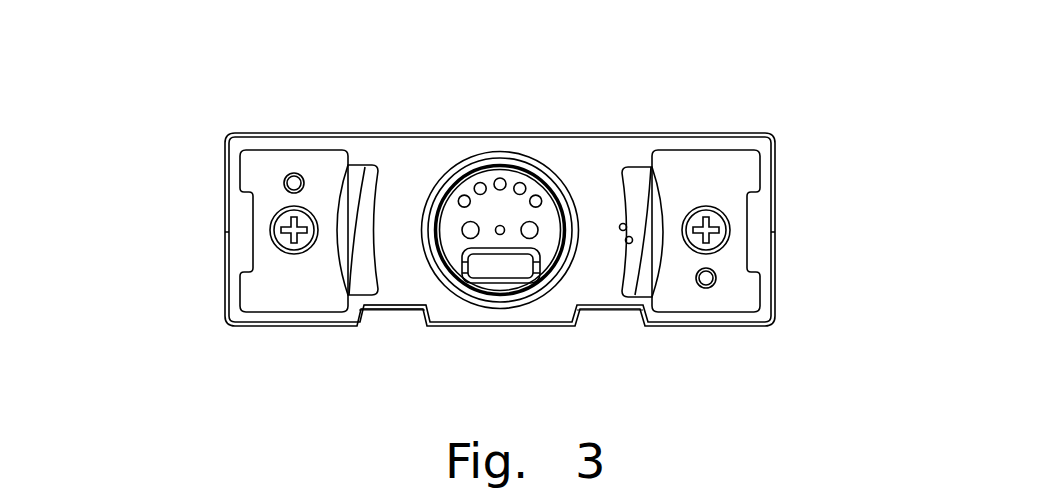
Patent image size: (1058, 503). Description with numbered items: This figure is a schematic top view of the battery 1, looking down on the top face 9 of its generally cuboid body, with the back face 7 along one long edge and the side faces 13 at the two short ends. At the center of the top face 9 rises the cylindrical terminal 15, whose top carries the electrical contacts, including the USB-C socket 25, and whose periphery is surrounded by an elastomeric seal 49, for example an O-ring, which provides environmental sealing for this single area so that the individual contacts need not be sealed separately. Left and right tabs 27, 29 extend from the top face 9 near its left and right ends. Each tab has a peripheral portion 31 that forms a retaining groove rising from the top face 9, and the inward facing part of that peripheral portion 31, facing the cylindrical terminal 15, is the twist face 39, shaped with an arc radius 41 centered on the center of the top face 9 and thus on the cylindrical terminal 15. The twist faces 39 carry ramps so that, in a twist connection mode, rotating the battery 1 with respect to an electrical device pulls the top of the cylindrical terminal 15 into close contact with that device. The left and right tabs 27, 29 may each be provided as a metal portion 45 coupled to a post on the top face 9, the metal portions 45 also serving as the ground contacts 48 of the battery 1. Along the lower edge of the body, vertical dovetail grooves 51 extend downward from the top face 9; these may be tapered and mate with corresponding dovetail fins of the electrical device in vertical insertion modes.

The battery 1 is at (393, 107).
The back face 7 is at (693, 135).
The top face 9 is at (585, 155).
The side faces 13 is at (227, 232).
The cylindrical terminal 15 is at (500, 207).
The USB-C socket 25 is at (497, 265).
The left tab 27 is at (288, 292).
The right tab 29 is at (960, 407).
The peripheral portion 31 is at (662, 312).
The twist face 39 is at (370, 210).
The arc radius 41 is at (357, 231).
The metal portion 45 is at (294, 230).
The ground contacts 48 is at (294, 183).
The elastomeric seal 49 is at (480, 158).
The vertical dovetail grooves 51 is at (385, 318).